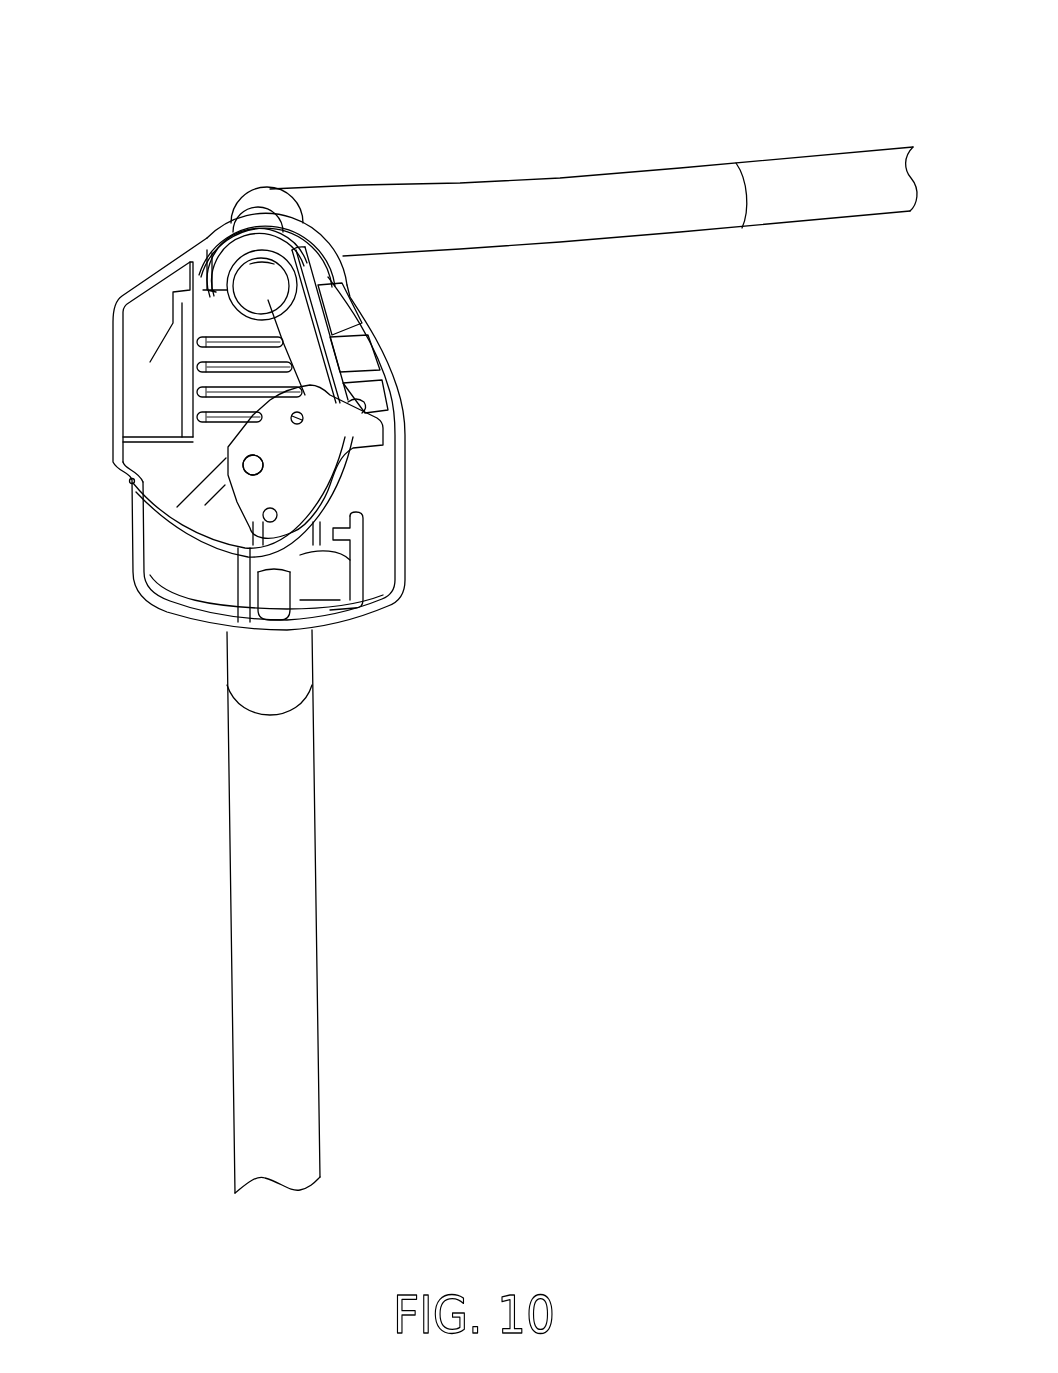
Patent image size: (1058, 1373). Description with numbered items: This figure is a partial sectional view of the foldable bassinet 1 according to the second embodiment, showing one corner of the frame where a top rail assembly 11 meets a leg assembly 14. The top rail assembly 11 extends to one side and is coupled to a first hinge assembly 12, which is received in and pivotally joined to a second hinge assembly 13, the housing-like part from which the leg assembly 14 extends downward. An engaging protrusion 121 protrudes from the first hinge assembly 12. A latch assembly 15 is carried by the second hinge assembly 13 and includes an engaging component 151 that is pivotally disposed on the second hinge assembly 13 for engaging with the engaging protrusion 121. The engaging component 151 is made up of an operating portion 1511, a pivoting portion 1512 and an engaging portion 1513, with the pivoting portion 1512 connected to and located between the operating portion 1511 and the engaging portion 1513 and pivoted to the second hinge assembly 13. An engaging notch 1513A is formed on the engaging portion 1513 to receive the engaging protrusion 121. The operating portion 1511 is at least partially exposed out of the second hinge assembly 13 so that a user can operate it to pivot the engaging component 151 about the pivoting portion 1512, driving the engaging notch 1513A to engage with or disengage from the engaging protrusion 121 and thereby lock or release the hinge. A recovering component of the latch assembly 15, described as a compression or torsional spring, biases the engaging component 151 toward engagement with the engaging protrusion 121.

The foldable bassinet 1 is at (152, 88).
The top rail assembly 11 is at (556, 200).
The first hinge assembly 12 is at (310, 262).
The engaging protrusion 121 is at (327, 353).
The second hinge assembly 13 is at (133, 253).
The leg assembly 14 is at (187, 760).
The latch assembly 15 is at (130, 597).
The engaging component 151 is at (695, 703).
The operating portion 1511 is at (262, 606).
The pivoting portion 1512 is at (258, 466).
The engaging portion 1513 is at (333, 420).
The engaging notch 1513A is at (350, 391).